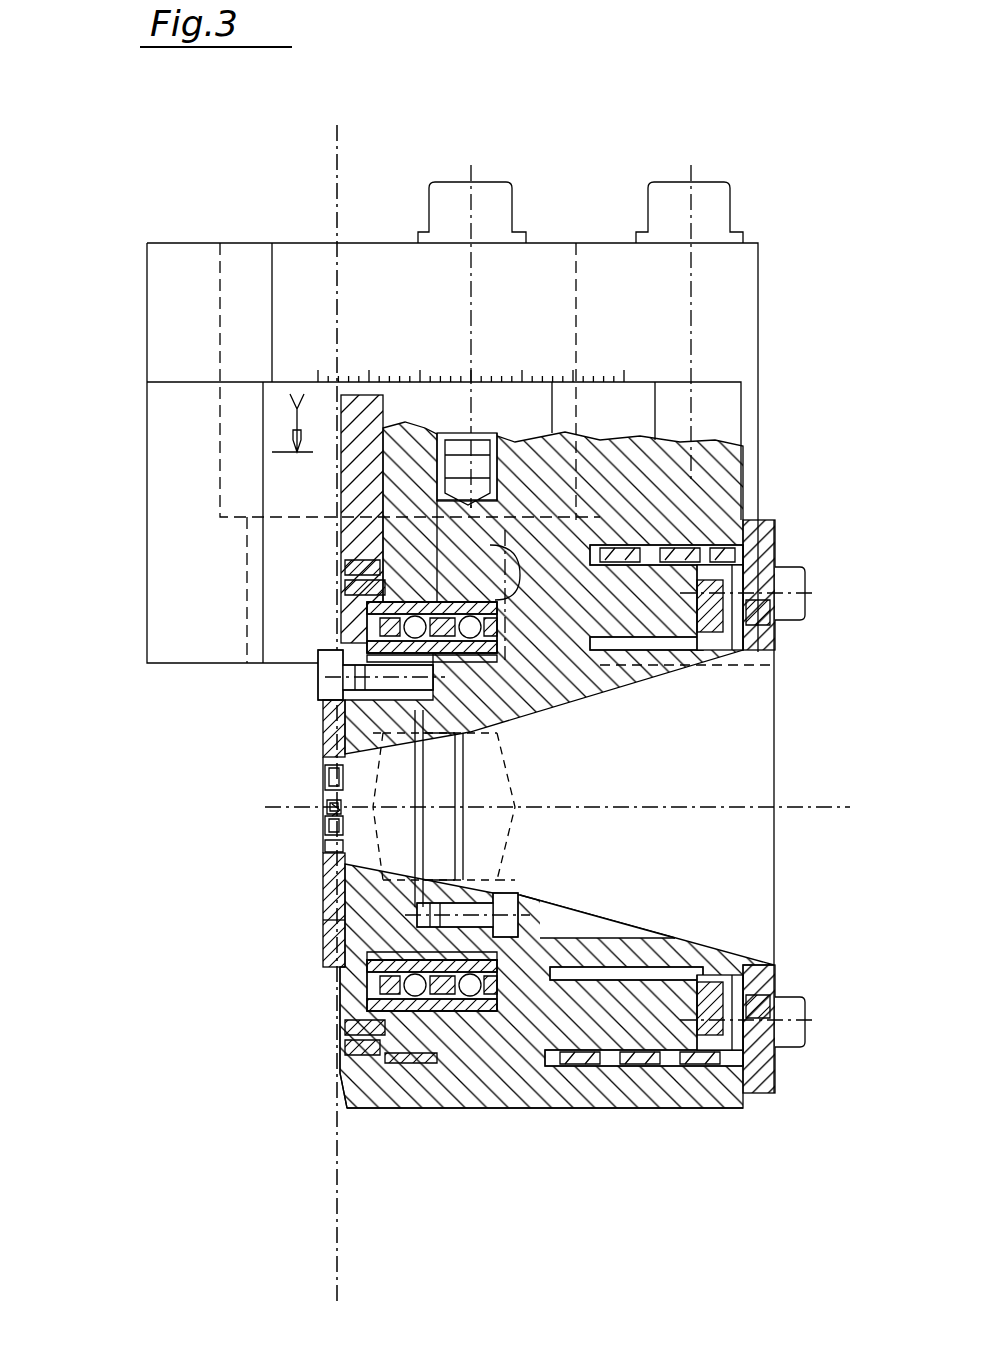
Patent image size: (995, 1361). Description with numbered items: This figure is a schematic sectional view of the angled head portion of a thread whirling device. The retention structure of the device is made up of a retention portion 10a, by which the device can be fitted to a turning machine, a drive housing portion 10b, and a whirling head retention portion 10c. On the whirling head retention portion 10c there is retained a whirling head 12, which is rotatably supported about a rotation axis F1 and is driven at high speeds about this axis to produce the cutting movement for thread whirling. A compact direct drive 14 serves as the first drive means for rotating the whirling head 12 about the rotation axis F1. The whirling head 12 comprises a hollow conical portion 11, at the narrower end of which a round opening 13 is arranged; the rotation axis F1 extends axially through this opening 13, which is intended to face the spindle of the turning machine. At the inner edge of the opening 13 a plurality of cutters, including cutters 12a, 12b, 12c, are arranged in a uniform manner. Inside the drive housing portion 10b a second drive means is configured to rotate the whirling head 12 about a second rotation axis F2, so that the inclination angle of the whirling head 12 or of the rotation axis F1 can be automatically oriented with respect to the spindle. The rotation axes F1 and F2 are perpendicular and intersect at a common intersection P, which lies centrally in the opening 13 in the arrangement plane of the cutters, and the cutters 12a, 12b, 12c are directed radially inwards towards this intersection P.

The retention portion 10a is at (160, 573).
The drive housing portion 10b is at (737, 312).
The whirling head retention portion 10c is at (553, 1092).
The hollow conical portion 11 is at (598, 680).
The whirling head 12 is at (326, 720).
The cutter 12a is at (323, 846).
The cutter 12b is at (323, 822).
The cutter 12c is at (323, 772).
The round opening 13 is at (323, 800).
The compact direct drive 14 is at (640, 596).
The rotation axis F1 is at (748, 805).
The second rotation axis F2 is at (345, 1240).
The intersection P is at (338, 808).